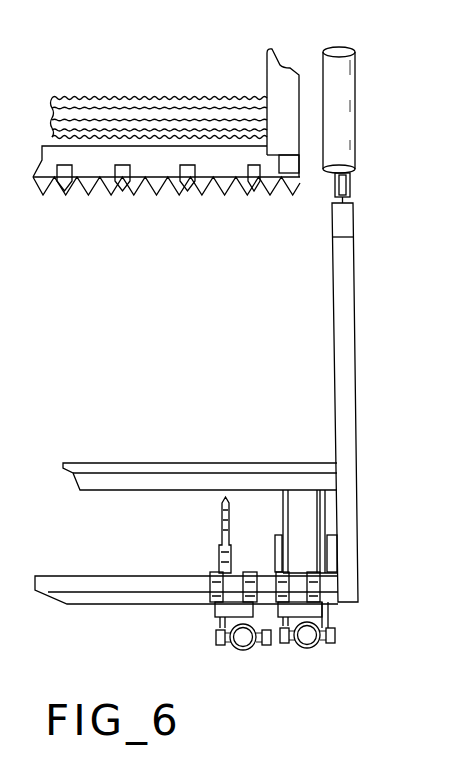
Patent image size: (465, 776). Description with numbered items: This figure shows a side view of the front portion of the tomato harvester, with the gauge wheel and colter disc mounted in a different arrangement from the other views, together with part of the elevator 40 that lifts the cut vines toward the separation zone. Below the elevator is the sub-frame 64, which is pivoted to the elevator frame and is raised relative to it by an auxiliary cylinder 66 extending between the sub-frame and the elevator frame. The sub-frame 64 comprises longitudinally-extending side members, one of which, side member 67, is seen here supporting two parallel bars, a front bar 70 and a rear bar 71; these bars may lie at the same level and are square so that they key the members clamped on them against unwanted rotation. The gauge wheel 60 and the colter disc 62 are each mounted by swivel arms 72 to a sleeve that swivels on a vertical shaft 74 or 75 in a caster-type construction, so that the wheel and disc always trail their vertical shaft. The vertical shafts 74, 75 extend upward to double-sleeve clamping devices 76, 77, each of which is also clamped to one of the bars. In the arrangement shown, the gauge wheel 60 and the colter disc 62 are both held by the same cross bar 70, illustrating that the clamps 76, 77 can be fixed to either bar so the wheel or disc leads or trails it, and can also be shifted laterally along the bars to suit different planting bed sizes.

The elevator 40 is at (221, 98).
The auxiliary cylinder 66 is at (343, 128).
The sub-frame 64 is at (364, 314).
The side member 67 is at (357, 381).
The rear bar 71 is at (167, 470).
The front bar 70 is at (145, 600).
The gauge wheel 60 is at (298, 508).
The colter disc 62 is at (220, 524).
The swivel arm 72 is at (376, 555).
The double-sleeve clamping device 77 is at (207, 625).
The double-sleeve clamping device 76 is at (327, 617).
The vertical shaft 75 is at (243, 641).
The vertical shaft 74 is at (307, 639).